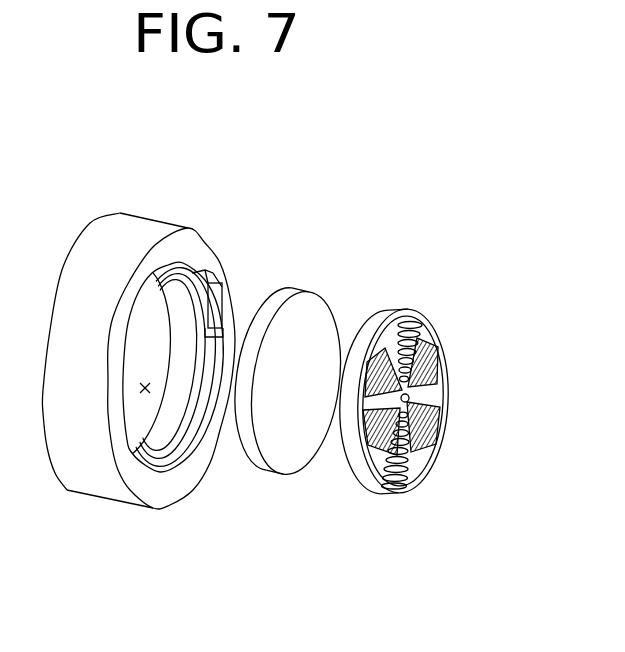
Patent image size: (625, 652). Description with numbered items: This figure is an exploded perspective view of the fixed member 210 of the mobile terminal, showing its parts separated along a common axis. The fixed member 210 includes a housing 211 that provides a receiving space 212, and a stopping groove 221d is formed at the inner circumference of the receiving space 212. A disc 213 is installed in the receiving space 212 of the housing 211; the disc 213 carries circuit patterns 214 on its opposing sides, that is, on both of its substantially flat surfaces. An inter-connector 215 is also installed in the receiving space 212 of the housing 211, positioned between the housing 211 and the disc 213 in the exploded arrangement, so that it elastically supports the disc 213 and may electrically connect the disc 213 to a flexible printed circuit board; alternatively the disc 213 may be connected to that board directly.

The fixed member 210 is at (95, 250).
The housing 211 is at (86, 472).
The receiving space 212 is at (146, 394).
The stopping groove 221d is at (228, 253).
The inter-connector 215 is at (287, 447).
The disc 213 is at (367, 493).
The circuit patterns 214 is at (413, 470).